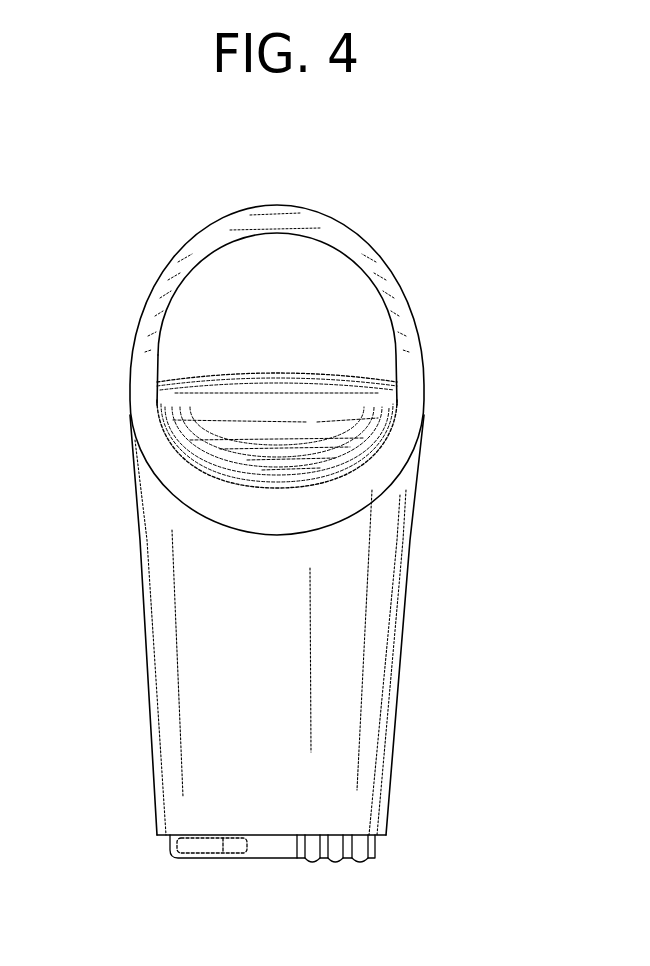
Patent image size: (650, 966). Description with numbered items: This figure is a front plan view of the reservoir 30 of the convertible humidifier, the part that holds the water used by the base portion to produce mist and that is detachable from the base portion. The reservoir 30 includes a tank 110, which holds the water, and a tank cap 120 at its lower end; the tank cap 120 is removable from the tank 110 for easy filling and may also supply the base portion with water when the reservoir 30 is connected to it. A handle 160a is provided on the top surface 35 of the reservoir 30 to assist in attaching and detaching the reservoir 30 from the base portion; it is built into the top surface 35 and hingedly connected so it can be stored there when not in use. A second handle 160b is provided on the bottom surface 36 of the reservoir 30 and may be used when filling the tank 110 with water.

The handle 160a is at (145, 307).
The top surface 35 is at (397, 383).
The reservoir 30 is at (462, 608).
The bottom surface 36 is at (376, 840).
The tank 110 is at (276, 850).
The handle 160b is at (172, 842).
The tank cap 120 is at (376, 856).